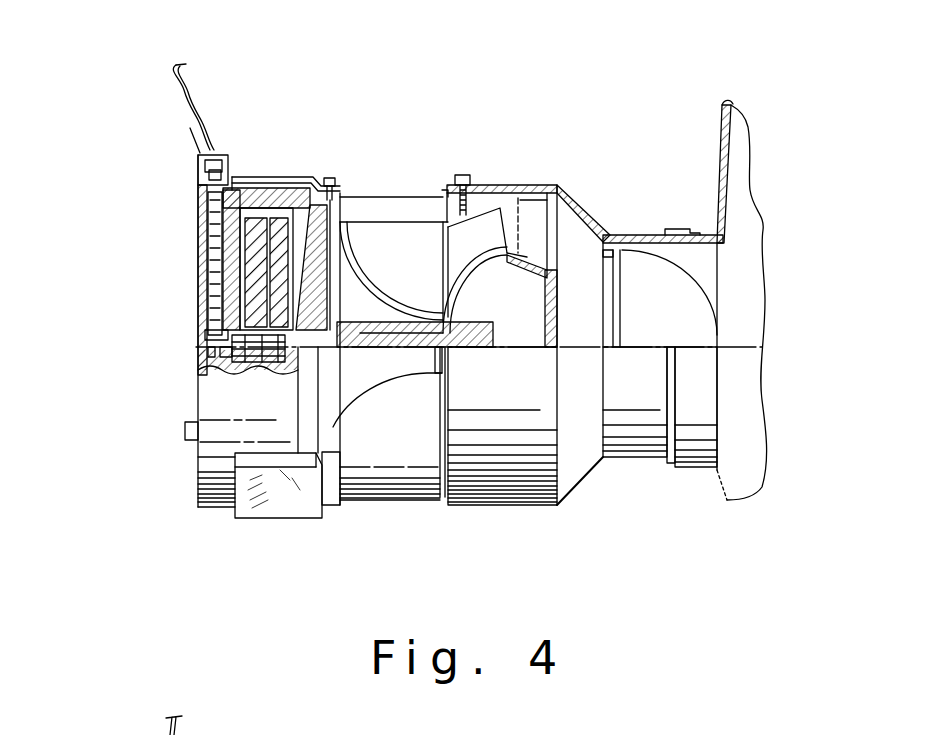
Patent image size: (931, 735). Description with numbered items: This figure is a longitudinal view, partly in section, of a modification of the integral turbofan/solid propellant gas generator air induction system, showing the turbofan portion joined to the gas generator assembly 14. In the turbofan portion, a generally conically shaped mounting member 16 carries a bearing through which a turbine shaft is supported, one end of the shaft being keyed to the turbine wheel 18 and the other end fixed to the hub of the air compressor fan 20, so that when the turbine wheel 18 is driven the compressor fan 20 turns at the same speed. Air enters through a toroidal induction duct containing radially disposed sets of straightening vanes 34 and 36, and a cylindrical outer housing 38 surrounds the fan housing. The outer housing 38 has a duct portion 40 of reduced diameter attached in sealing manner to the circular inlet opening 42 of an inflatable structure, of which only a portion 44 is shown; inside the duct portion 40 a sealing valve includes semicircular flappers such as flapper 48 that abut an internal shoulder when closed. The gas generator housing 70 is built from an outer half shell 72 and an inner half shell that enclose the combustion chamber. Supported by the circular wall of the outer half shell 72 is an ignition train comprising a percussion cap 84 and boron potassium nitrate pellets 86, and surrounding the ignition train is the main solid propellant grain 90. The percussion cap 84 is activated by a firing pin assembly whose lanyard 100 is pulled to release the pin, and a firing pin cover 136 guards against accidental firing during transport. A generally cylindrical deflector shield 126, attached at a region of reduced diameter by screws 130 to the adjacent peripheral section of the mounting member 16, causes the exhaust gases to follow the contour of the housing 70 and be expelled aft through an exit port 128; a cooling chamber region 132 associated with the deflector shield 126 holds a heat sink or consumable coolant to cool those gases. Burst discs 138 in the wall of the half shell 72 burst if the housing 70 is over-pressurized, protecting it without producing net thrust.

The gas generator assembly 14 is at (314, 55).
The mounting member 16 is at (387, 409).
The turbine wheel 18 is at (325, 265).
The air compressor fan 20 is at (465, 265).
The straightening vanes 34 is at (415, 346).
The straightening vanes 36 is at (554, 231).
The cylindrical outer housing 38 is at (529, 287).
The duct portion 40 is at (663, 189).
The circular inlet opening 42 is at (681, 192).
The portion of inflatable structure 44 is at (721, 258).
The flapper 48 is at (660, 355).
The housing 70 is at (206, 368).
The outer half shell 72 is at (204, 512).
The percussion cap 84 is at (176, 268).
The boron potassium nitrate pellets 86 is at (202, 364).
The main solid propellant grain 90 is at (193, 260).
The lanyard 100 is at (150, 105).
The deflector shield 126 is at (284, 149).
The exit port 128 is at (244, 98).
The screws 130 is at (395, 132).
The cooling chamber region 132 is at (287, 509).
The firing pin cover 136 is at (122, 172).
The burst discs 138 is at (137, 414).